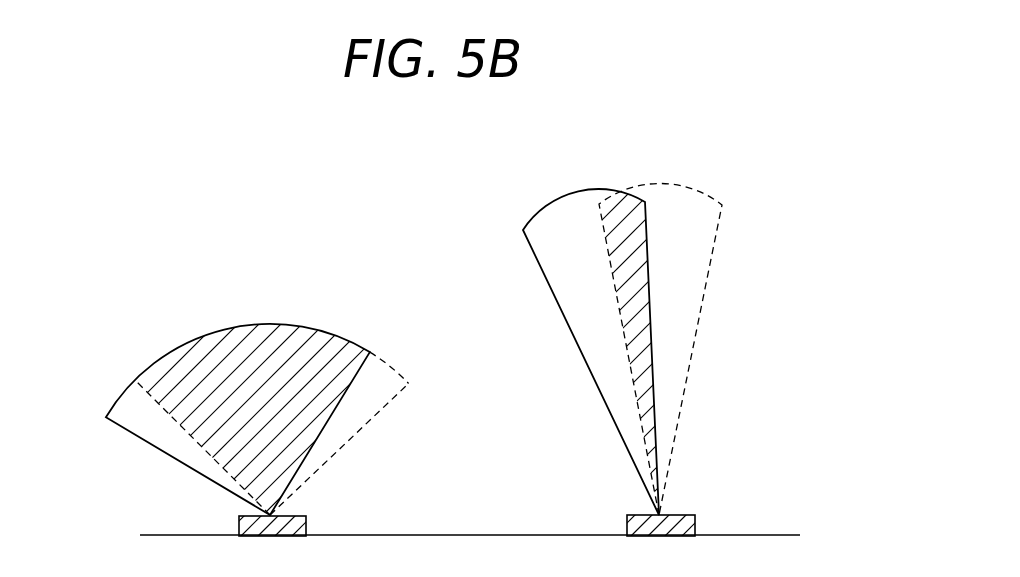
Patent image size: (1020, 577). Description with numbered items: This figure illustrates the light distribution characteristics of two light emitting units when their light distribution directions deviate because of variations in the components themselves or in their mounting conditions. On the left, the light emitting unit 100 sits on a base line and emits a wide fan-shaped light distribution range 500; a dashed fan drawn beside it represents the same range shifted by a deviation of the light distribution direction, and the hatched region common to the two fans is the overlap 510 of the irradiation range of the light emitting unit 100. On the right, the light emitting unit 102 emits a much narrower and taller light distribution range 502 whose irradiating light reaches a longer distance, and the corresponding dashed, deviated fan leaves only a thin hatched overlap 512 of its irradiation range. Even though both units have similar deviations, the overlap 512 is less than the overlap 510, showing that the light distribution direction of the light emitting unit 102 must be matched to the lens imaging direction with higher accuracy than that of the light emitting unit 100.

The light distribution range 500 is at (187, 448).
The overlap of the irradiation range 510 is at (310, 355).
The light emitting unit 100 is at (307, 521).
The light distribution range 502 is at (576, 320).
The overlap of the irradiation range 512 is at (616, 211).
The light emitting unit 102 is at (690, 524).